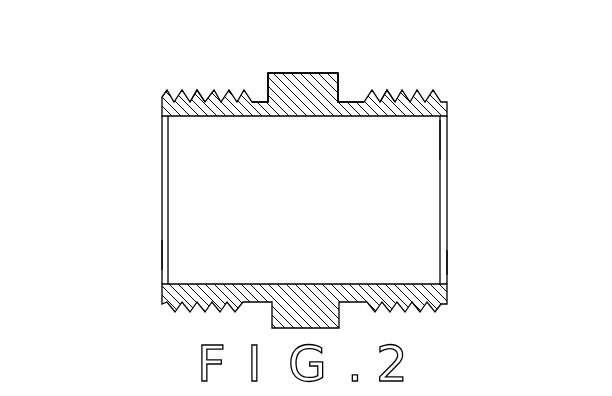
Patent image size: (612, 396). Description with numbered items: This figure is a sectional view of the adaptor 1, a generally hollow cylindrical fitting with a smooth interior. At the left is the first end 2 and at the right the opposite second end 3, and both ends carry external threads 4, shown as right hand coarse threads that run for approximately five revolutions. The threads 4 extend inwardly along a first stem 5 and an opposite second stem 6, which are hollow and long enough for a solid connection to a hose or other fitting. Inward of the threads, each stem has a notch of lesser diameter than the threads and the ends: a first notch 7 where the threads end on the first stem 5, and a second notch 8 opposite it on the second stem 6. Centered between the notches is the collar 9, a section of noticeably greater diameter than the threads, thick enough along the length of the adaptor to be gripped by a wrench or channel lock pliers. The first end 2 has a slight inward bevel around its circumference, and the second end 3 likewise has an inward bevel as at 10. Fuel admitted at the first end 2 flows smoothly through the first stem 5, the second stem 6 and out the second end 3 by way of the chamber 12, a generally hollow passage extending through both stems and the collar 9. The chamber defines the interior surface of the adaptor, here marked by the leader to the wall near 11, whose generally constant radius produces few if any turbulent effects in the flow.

The adaptor 1 is at (288, 166).
The first end 2 is at (162, 175).
The second end 3 is at (450, 196).
The external threads 4 is at (180, 93).
The first stem 5 is at (200, 70).
The second stem 6 is at (392, 75).
The first notch 7 is at (258, 97).
The second notch 8 is at (347, 97).
The collar 9 is at (316, 72).
The inward bevel 10 is at (447, 263).
The gasket 11 is at (420, 148).
The chamber 12 is at (368, 282).